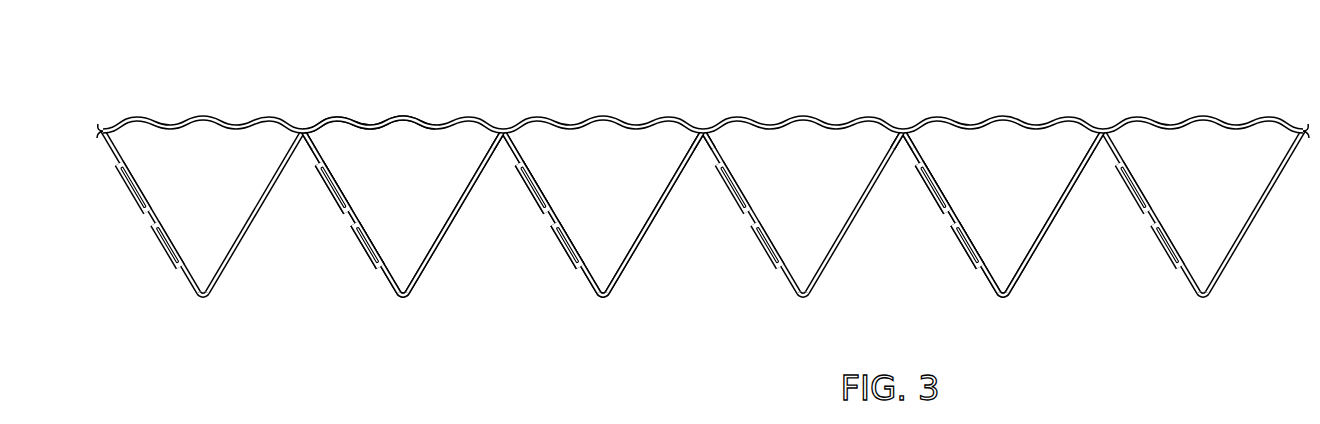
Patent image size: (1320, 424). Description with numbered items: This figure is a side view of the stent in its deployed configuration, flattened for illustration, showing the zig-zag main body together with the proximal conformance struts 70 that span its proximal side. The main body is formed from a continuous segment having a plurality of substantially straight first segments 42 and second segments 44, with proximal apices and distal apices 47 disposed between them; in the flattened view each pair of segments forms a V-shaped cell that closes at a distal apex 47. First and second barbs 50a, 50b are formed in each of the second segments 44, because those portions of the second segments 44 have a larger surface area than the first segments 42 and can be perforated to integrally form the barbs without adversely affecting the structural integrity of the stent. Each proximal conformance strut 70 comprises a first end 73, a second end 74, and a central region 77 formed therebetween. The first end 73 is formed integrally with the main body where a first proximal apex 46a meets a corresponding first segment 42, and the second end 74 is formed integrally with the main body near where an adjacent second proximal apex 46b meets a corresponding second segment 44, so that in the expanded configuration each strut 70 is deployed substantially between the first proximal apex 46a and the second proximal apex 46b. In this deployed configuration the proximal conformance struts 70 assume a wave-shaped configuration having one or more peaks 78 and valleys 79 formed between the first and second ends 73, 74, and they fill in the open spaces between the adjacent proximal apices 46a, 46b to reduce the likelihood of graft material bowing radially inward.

The first segment 42 is at (437, 252).
The second segment 44 is at (550, 216).
The first proximal apex 46a is at (903, 122).
The second proximal apex 46b is at (703, 122).
The distal apex 47 is at (605, 303).
The first barb 50a is at (716, 184).
The second barb 50b is at (757, 249).
The proximal conformance strut 70 is at (421, 105).
The first end 73 is at (490, 126).
The second end 74 is at (316, 128).
The central region 77 is at (801, 117).
The peak 78 is at (400, 118).
The valley 79 is at (437, 131).